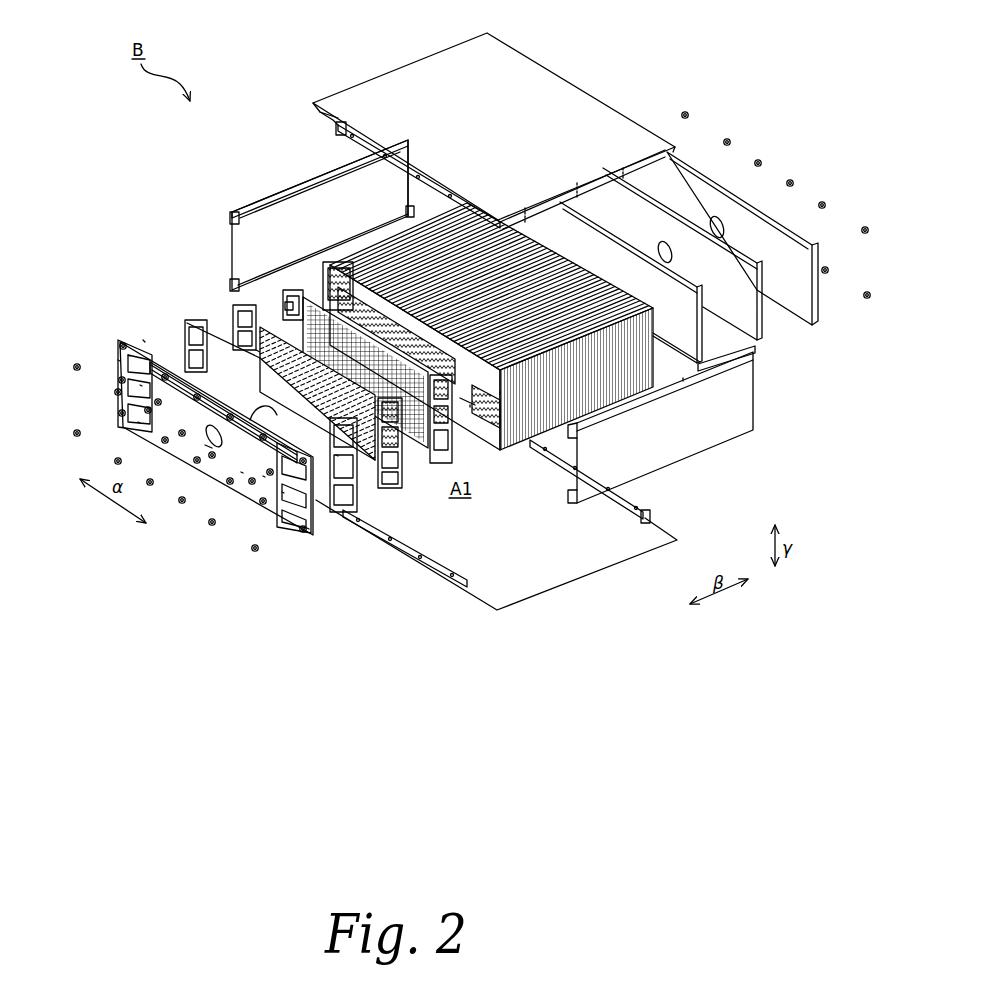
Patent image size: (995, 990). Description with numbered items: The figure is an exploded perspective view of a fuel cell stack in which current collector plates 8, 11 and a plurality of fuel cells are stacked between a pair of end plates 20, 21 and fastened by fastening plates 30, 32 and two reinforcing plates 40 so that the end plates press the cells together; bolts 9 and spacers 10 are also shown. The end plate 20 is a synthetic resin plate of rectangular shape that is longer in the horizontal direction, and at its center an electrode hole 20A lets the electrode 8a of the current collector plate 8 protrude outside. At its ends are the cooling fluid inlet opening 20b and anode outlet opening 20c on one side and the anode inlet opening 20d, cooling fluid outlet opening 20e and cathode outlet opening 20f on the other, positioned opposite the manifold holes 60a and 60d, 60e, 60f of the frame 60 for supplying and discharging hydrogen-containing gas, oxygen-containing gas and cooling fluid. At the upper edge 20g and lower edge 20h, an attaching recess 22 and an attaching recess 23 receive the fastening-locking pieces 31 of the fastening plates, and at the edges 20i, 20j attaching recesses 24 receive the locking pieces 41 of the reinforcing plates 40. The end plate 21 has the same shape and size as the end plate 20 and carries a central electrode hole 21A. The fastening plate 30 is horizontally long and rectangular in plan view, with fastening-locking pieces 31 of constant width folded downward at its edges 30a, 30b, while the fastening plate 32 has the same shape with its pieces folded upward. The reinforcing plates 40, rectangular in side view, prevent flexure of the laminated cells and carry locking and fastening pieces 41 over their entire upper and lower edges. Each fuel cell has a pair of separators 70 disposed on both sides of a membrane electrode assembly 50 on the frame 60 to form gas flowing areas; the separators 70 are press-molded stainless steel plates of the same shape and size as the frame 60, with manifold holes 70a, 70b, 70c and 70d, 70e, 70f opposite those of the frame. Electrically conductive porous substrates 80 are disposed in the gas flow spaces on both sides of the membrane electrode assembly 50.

The current collector plate 8 is at (178, 370).
The electrode 8a is at (330, 512).
The bolts 9 is at (690, 112).
The spacers 10 is at (757, 334).
The current collector plate 11 is at (700, 340).
The end plate 20 is at (304, 536).
The electrode hole 20A is at (128, 355).
The cooling fluid inlet opening 20b is at (142, 385).
The anode outlet opening 20c is at (140, 422).
The anode inlet opening 20d is at (338, 456).
The cooling fluid outlet opening 20e is at (265, 475).
The cathode outlet opening 20f is at (283, 492).
The upper edge 20g is at (143, 340).
The lower edge 20h is at (243, 470).
The edge 20i is at (118, 360).
The edge 20j is at (308, 528).
The end plate 21 is at (820, 327).
The electrode hole 21A is at (722, 218).
The attaching recess 22 is at (183, 370).
The attaching recess 23 is at (211, 460).
The attaching recesses 24 is at (120, 345).
The fastening plate 30 is at (383, 68).
The edge 30a is at (328, 118).
The edge 30b is at (500, 40).
The fastening-locking pieces 31 is at (566, 77).
The fastening plate 32 is at (587, 580).
The reinforcing plate 40 is at (297, 178).
The locking and fastening pieces 41 is at (320, 254).
The membrane electrode assembly 50 is at (430, 472).
The frame 60 is at (303, 272).
The manifold hole 60a is at (285, 302).
The manifold hole 60d is at (500, 392).
The manifold hole 60e is at (470, 405).
The manifold hole 60f is at (452, 440).
The separator 70 is at (287, 298).
The manifold hole 70a is at (286, 306).
The manifold hole 70b is at (233, 314).
The manifold hole 70c is at (470, 405).
The manifold hole 70d is at (413, 414).
The manifold hole 70e is at (407, 428).
The manifold hole 70f is at (392, 489).
The electrically conductive porous substrate 80 is at (325, 256).